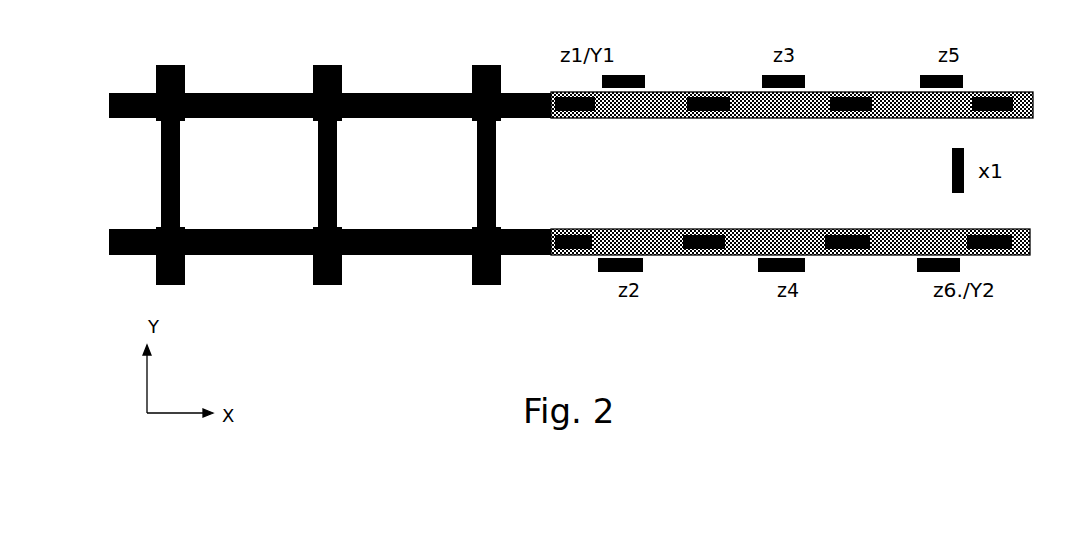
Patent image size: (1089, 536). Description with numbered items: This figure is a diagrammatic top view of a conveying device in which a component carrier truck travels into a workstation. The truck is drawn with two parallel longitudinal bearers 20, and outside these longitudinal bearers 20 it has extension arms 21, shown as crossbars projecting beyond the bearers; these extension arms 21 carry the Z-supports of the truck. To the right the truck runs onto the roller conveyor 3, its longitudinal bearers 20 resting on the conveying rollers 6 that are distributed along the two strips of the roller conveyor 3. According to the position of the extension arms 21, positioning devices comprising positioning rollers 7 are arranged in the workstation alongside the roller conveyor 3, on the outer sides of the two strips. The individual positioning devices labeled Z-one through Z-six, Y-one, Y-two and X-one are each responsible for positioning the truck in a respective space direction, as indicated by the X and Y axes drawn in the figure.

The longitudinal bearers 20 is at (109, 104).
The extension arms 21 is at (165, 66).
The roller conveyor 3 is at (925, 118).
The conveying rollers 6 is at (572, 112).
The positioning rollers 7 is at (628, 76).